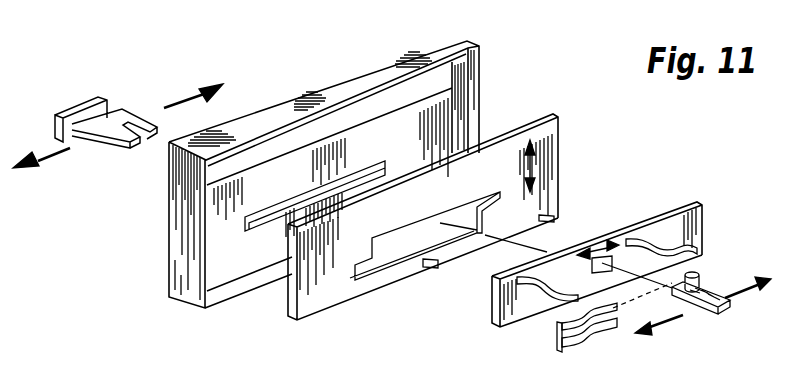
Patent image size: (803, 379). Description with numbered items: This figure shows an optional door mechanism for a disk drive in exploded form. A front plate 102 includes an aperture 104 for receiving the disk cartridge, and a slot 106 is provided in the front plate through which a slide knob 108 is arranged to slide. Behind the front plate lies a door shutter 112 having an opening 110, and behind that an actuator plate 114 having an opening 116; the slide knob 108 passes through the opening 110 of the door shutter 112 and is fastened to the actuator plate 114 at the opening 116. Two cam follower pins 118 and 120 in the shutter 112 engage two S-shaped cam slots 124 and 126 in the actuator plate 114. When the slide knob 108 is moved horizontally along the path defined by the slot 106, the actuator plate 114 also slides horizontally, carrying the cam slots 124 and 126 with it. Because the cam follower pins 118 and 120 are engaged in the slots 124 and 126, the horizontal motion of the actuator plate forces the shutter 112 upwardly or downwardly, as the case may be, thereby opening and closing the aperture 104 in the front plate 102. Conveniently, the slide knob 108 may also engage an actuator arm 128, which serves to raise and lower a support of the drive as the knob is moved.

The front plate 102 is at (187, 247).
The aperture 104 is at (400, 95).
The slot 106 is at (278, 208).
The slide knob 108 is at (84, 112).
The opening 110 is at (398, 242).
The door shutter 112 is at (566, 150).
The actuator plate 114 is at (698, 204).
The opening 116 is at (612, 265).
The cam follower pin 118 is at (432, 268).
The cam follower pin 120 is at (557, 221).
The S-shaped cam slot 124 is at (550, 298).
The S-shaped cam slot 126 is at (700, 234).
The actuator arm 128 is at (711, 313).